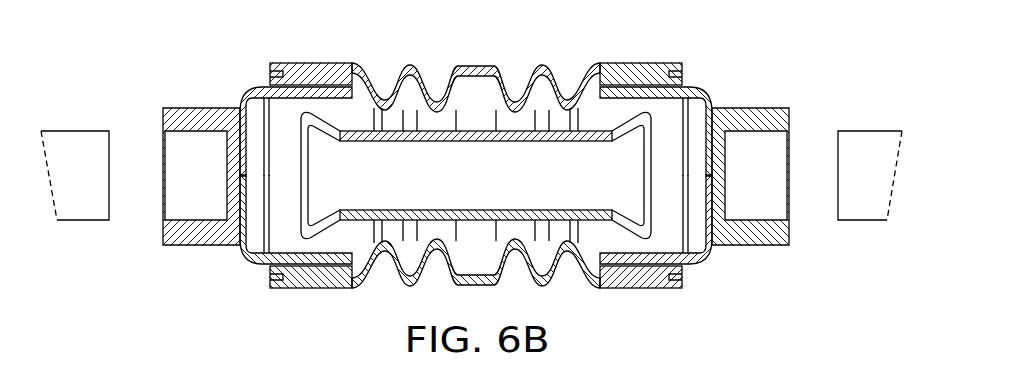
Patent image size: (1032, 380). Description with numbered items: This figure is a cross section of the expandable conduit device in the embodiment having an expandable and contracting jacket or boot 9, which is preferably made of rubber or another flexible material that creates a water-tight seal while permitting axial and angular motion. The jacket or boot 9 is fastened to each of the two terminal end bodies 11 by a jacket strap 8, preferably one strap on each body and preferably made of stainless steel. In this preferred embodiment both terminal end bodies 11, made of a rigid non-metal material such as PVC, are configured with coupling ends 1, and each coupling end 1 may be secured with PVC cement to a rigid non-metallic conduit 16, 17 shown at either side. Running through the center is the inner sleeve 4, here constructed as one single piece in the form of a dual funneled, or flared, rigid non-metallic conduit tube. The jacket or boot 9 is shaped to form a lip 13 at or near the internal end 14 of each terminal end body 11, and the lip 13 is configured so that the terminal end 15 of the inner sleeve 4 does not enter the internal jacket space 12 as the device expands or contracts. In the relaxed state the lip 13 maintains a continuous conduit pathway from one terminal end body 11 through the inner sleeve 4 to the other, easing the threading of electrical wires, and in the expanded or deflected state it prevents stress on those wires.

The coupling end 1 is at (163, 182).
The inner sleeve 4 is at (485, 118).
The jacket strap 8 is at (310, 63).
The expandable and contracting jacket or boot 9 is at (464, 98).
The terminal end body 11 is at (197, 108).
The internal jacket space 12 is at (443, 66).
The lip 13 is at (575, 98).
The internal end 14 is at (370, 65).
The terminal end 15 is at (657, 150).
The rigid non-metallic conduit 16 is at (67, 130).
The rigid non-metallic conduit 17 is at (852, 128).